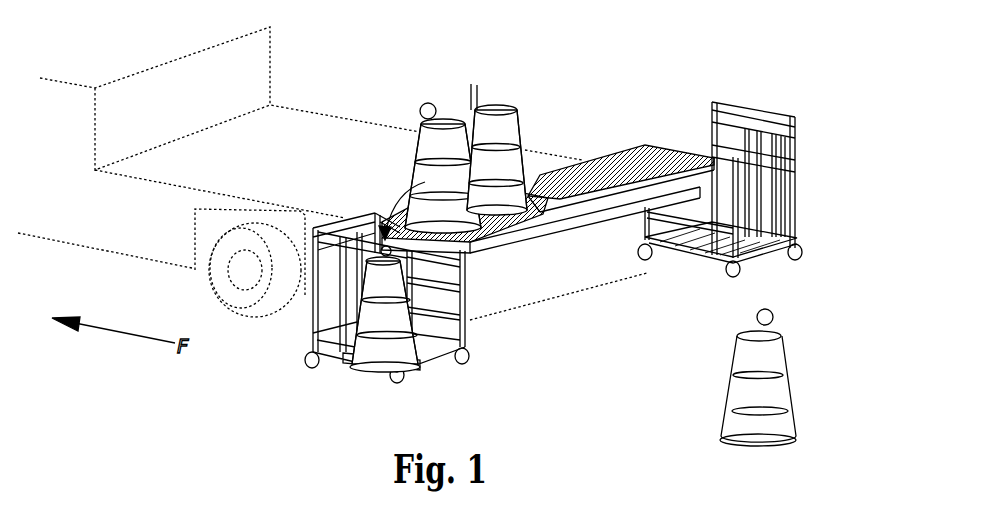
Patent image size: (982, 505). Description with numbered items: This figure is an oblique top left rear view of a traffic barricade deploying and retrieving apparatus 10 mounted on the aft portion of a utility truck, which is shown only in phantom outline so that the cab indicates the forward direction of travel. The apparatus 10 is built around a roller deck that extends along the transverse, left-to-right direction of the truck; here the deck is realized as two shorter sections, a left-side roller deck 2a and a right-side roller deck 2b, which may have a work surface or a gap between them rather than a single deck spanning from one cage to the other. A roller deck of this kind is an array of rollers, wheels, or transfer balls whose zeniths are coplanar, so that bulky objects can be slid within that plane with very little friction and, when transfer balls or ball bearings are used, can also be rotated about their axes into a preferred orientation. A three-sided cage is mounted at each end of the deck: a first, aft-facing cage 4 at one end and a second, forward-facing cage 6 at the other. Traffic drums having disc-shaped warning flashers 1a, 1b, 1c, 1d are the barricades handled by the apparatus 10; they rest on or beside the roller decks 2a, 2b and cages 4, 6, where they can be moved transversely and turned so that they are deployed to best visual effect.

The apparatus 10 is at (844, 60).
The drum having disc-shaped warning flasher 1a is at (510, 108).
The drum having disc-shaped warning flasher 1b is at (429, 103).
The drum having disc-shaped warning flasher 1c is at (363, 318).
The drum having disc-shaped warning flasher 1d is at (785, 350).
The left-side roller deck 2a is at (508, 236).
The right-side roller deck 2b is at (628, 150).
The first, aft-facing cage 4 is at (485, 361).
The second, forward-facing cage 6 is at (812, 106).